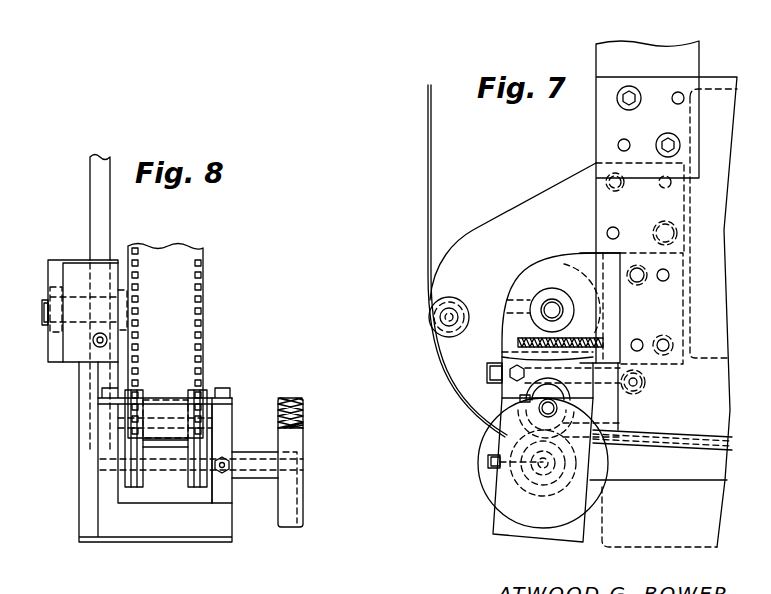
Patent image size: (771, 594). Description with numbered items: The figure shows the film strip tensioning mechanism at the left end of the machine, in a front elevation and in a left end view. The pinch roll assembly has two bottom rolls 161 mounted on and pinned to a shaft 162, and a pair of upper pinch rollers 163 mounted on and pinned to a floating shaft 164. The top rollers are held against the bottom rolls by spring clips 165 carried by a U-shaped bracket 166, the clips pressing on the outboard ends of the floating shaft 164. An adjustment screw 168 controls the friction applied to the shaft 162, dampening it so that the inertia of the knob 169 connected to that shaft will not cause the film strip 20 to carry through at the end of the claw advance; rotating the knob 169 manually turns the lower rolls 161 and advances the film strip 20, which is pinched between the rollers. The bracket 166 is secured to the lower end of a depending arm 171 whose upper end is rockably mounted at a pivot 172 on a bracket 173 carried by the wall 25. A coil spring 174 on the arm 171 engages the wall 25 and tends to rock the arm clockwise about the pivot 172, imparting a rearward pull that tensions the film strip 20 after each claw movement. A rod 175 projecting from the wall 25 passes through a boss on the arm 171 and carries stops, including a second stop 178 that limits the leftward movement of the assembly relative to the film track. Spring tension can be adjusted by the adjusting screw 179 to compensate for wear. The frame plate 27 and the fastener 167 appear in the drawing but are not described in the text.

In FIG. 7, the film strip 20 is at (428, 124).
In FIG. 8, the film strip 20 is at (166, 250).
In FIG. 8, the wall 25 is at (90, 192).
In FIG. 7, the frame plate 27 is at (650, 68).
In FIG. 7, the bottom rolls 161 is at (510, 477).
In FIG. 8, the bottom rolls 161 is at (131, 489).
In FIG. 7, the shaft 162 is at (502, 500).
In FIG. 8, the shaft 162 is at (170, 472).
In FIG. 7, the upper pinch rollers 163 is at (500, 420).
In FIG. 8, the upper pinch rollers 163 is at (200, 390).
In FIG. 7, the floating shaft 164 is at (545, 398).
In FIG. 8, the floating shaft 164 is at (166, 400).
In FIG. 7, the spring clips 165 is at (500, 383).
In FIG. 8, the spring clips 165 is at (232, 398).
In FIG. 8, the U-shaped bracket 166 is at (232, 433).
In FIG. 7, the screw 167 is at (593, 392).
In FIG. 7, the adjustment screw 168 is at (488, 462).
In FIG. 8, the adjustment screw 168 is at (227, 472).
In FIG. 8, the knob 169 is at (303, 439).
In FIG. 7, the depending arm 171 is at (528, 533).
In FIG. 8, the depending arm 171 is at (84, 500).
In FIG. 7, the pivot 172 is at (552, 310).
In FIG. 7, the bracket 173 is at (588, 268).
In FIG. 7, the coil spring 174 is at (587, 327).
In FIG. 7, the rod 175 is at (502, 352).
In FIG. 7, the second stop 178 is at (490, 372).
In FIG. 7, the adjusting screw 179 is at (490, 290).